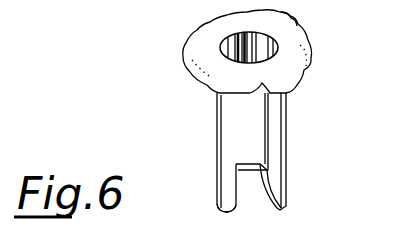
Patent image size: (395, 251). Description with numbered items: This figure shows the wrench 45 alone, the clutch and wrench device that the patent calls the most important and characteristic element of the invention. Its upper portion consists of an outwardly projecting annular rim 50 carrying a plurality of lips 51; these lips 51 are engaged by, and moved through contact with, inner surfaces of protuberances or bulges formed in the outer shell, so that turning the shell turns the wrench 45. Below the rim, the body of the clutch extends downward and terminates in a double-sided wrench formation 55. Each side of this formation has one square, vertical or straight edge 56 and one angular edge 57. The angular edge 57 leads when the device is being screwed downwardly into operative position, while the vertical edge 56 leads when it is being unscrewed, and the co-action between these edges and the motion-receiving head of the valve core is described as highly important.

The wrench 45 is at (213, 119).
The annular rim 50 is at (293, 47).
The lips 51 is at (290, 14).
The double-sided wrench formation 55 is at (241, 225).
The vertical edge 56 is at (237, 197).
The angular edge 57 is at (236, 177).